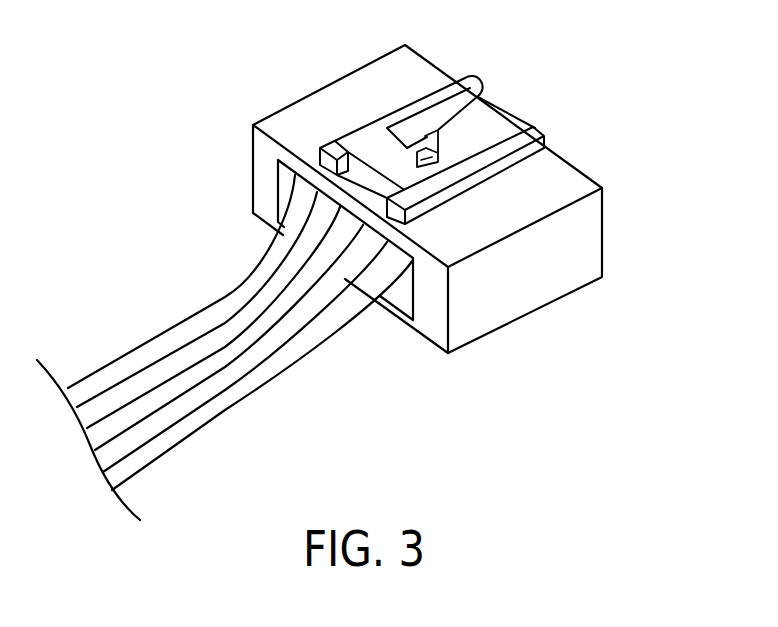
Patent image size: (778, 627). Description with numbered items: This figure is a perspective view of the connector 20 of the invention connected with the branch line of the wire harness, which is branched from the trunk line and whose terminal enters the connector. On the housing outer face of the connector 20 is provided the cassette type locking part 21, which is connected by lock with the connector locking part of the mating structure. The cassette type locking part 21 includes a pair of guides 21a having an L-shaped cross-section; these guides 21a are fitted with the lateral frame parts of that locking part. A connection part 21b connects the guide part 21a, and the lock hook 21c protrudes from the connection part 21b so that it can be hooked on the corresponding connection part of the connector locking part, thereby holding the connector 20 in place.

The connector 20 is at (587, 228).
The cassette type locking part 21 is at (448, 122).
The guides 21a is at (527, 134).
The connection part 21b is at (368, 143).
The lock hook 21c is at (440, 126).